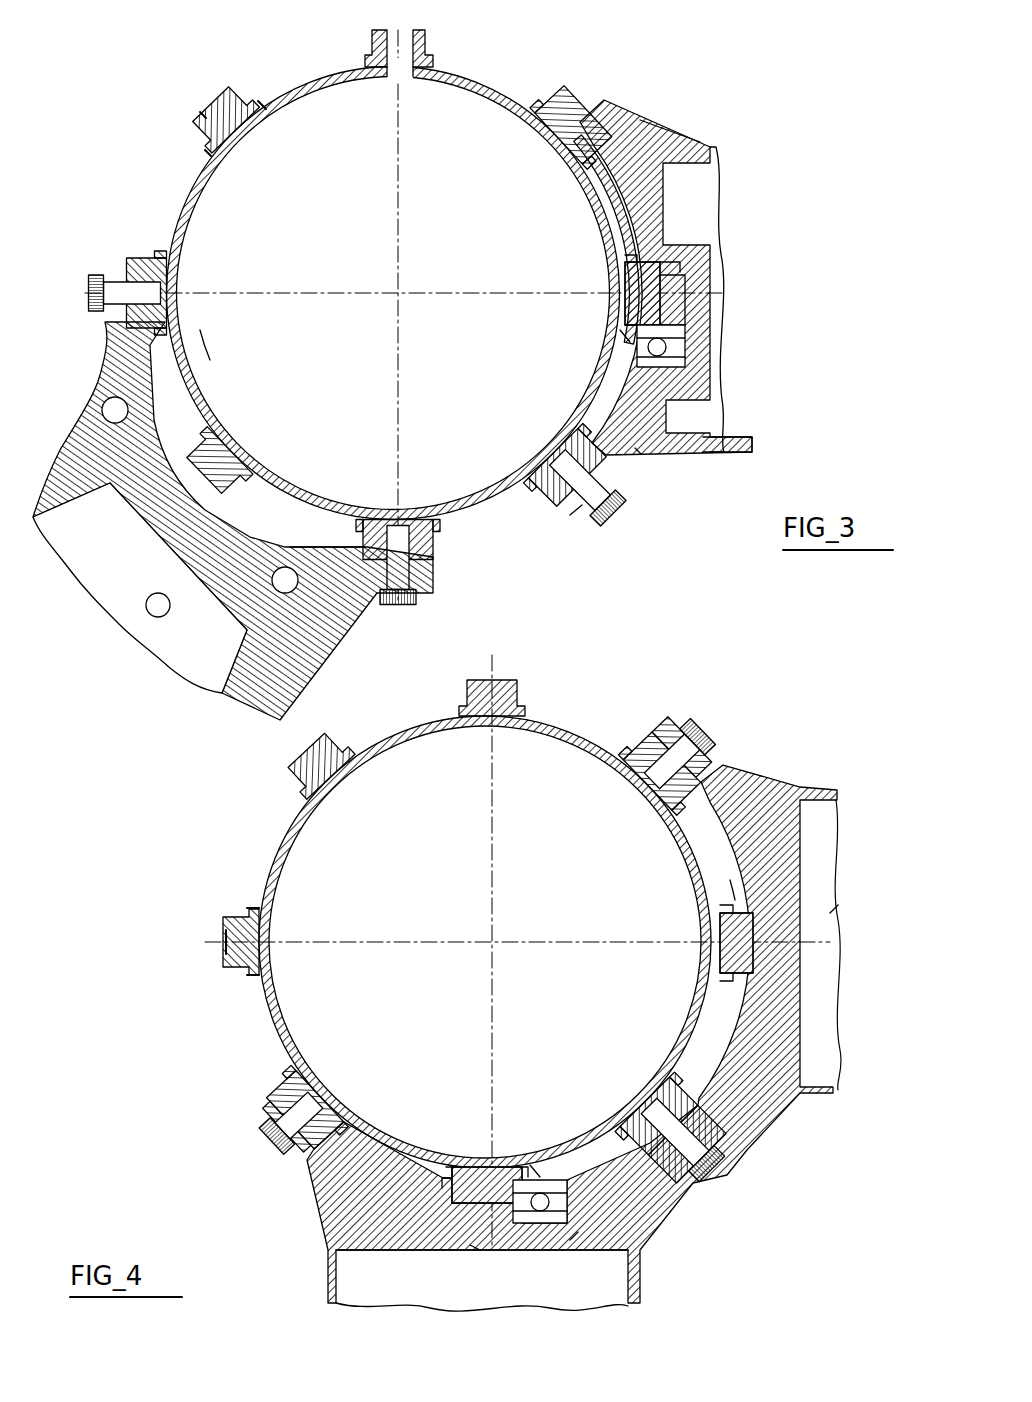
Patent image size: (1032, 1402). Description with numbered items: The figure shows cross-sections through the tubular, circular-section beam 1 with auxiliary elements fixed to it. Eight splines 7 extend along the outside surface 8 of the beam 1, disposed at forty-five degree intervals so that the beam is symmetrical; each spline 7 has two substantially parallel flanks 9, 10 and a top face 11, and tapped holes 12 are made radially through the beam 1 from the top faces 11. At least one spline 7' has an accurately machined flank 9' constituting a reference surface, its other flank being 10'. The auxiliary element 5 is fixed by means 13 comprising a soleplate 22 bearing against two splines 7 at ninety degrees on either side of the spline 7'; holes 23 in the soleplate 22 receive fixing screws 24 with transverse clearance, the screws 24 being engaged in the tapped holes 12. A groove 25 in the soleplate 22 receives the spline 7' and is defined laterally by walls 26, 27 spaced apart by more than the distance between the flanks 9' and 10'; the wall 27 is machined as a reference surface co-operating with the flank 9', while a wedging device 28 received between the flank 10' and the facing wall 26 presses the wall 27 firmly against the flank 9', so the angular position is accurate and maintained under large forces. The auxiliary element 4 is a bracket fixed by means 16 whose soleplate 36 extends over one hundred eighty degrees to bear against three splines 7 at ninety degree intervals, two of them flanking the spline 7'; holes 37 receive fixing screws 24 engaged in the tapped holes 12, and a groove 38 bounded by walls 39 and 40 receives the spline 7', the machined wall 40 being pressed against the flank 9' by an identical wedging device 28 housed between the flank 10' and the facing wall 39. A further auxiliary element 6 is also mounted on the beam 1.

In FIG. 3, the beam 1 is at (215, 367).
In FIG. 4, the auxiliary element 4 is at (865, 905).
In FIG. 3, the auxiliary element 5 is at (808, 125).
In FIG. 3, the support bracket 6 is at (100, 625).
In FIG. 3, the spline 7 is at (398, 286).
In FIG. 4, the spline 7 is at (496, 903).
In FIG. 3, the spline 7' is at (465, 417).
In FIG. 4, the spline 7' is at (599, 1054).
In FIG. 3, the outside surface 8 is at (308, 66).
In FIG. 4, the outside surface 8 is at (606, 730).
In FIG. 3, the flank 9 is at (252, 61).
In FIG. 4, the flank 9 is at (224, 1007).
In FIG. 3, the flank 9' is at (729, 219).
In FIG. 4, the flank 9' is at (355, 1217).
In FIG. 3, the flank 10 is at (166, 141).
In FIG. 4, the flank 10 is at (244, 867).
In FIG. 3, the flank 10' is at (672, 492).
In FIG. 4, the flank 10' is at (536, 1265).
In FIG. 3, the top face 11 is at (200, 110).
In FIG. 4, the top face 11 is at (225, 948).
In FIG. 3, the tapped hole 12 is at (398, 80).
In FIG. 4, the tapped hole 12 is at (650, 790).
In FIG. 3, the means for releasably fixing 13 is at (718, 135).
In FIG. 4, the means for releasably fixing 16 is at (808, 780).
In FIG. 3, the soleplate 22 is at (602, 180).
In FIG. 3, the hole 23 is at (575, 520).
In FIG. 3, the fixing screw 24 is at (100, 272).
In FIG. 4, the fixing screw 24 is at (710, 730).
In FIG. 3, the groove 25 is at (685, 348).
In FIG. 3, the wall 26 is at (700, 445).
In FIG. 3, the wall 27 is at (677, 288).
In FIG. 3, the wedging device 28 is at (630, 340).
In FIG. 4, the wedging device 28 is at (540, 1165).
In FIG. 4, the soleplate 36 is at (722, 882).
In FIG. 4, the hole 37 is at (740, 770).
In FIG. 4, the groove 38 is at (480, 1250).
In FIG. 4, the wall 39 is at (575, 1225).
In FIG. 3, the wall 40 is at (328, 540).
In FIG. 4, the wall 40 is at (480, 1225).